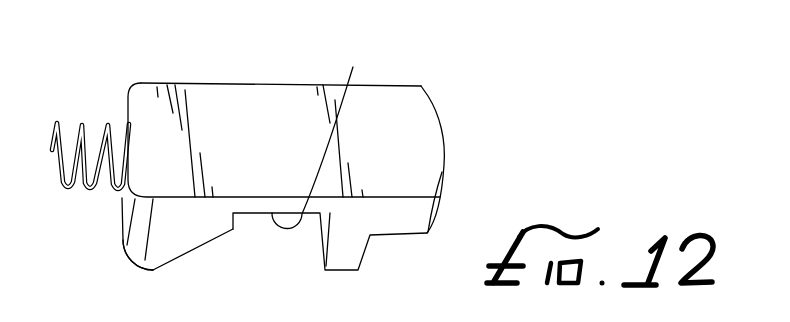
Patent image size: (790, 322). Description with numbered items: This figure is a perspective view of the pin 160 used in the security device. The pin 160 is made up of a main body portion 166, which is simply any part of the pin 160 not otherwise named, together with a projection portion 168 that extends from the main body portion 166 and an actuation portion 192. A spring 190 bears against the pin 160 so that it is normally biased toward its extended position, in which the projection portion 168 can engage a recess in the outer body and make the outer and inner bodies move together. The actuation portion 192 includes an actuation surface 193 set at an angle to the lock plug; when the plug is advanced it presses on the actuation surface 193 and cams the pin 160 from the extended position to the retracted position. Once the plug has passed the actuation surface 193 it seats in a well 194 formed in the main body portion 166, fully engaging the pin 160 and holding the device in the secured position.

The pin 160 is at (431, 94).
The main body portion 166 is at (238, 81).
The projection portion 168 is at (432, 200).
The spring 190 is at (108, 127).
The actuation portion 192 is at (225, 235).
The actuation surface 193 is at (181, 261).
The well 194 is at (324, 133).